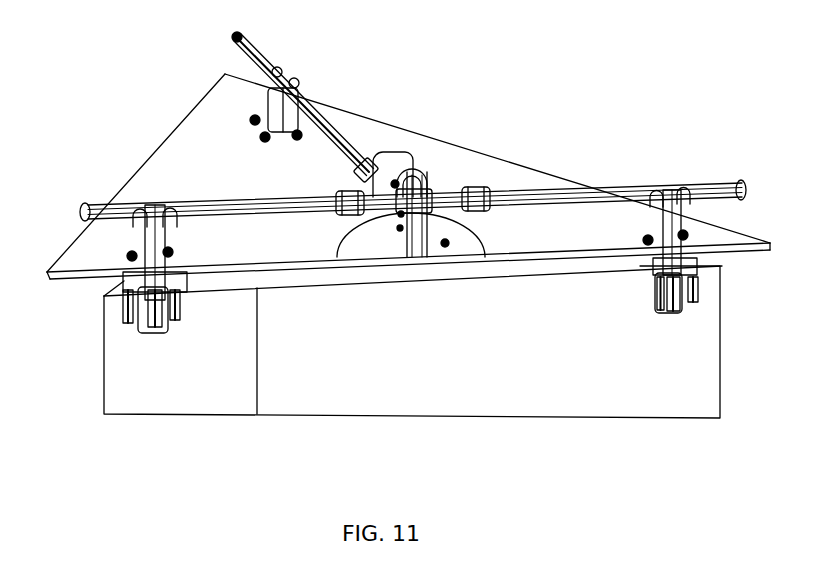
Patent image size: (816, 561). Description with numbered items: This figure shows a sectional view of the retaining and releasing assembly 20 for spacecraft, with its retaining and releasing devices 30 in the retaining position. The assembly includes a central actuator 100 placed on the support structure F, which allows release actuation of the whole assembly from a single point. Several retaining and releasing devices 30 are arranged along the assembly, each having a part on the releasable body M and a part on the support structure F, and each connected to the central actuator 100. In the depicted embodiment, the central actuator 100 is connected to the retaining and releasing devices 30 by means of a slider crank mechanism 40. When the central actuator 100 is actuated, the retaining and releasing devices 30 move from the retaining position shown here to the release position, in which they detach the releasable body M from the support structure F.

The support structure F is at (118, 193).
The releasable body M is at (686, 356).
The retaining and releasing assembly 20 is at (570, 181).
The retaining and releasing devices 30 is at (285, 97).
The slider crank mechanism 40 is at (298, 113).
The central actuator 100 is at (432, 187).